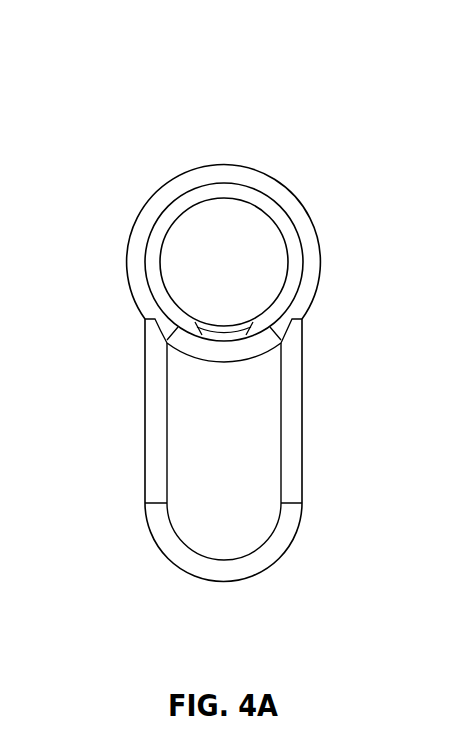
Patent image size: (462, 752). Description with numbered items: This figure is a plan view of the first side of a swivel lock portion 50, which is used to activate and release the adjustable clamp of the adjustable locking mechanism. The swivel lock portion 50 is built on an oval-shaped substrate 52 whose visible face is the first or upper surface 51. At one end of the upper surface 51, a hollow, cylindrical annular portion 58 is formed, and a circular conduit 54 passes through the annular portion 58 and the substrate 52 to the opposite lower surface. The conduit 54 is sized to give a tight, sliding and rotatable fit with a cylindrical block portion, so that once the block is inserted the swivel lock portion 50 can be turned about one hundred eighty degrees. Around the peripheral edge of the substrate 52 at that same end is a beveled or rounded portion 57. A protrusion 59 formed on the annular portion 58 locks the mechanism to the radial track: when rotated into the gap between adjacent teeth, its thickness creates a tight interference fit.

The swivel lock portion 50 is at (328, 67).
The first or upper surface 51 is at (220, 547).
The substrate 52 is at (303, 480).
The conduit 54 is at (254, 205).
The beveled or rounded portion 57 is at (308, 292).
The annular portion 58 is at (196, 192).
The protrusion 59 is at (223, 339).